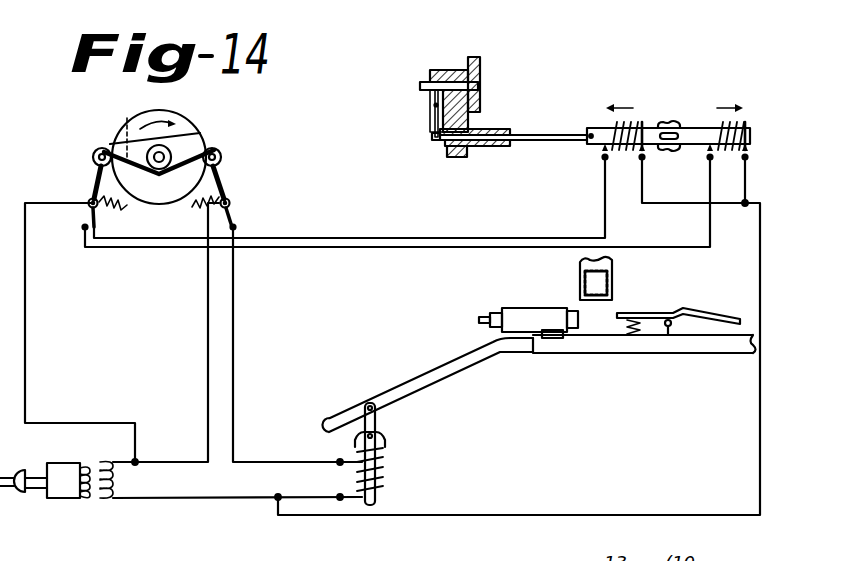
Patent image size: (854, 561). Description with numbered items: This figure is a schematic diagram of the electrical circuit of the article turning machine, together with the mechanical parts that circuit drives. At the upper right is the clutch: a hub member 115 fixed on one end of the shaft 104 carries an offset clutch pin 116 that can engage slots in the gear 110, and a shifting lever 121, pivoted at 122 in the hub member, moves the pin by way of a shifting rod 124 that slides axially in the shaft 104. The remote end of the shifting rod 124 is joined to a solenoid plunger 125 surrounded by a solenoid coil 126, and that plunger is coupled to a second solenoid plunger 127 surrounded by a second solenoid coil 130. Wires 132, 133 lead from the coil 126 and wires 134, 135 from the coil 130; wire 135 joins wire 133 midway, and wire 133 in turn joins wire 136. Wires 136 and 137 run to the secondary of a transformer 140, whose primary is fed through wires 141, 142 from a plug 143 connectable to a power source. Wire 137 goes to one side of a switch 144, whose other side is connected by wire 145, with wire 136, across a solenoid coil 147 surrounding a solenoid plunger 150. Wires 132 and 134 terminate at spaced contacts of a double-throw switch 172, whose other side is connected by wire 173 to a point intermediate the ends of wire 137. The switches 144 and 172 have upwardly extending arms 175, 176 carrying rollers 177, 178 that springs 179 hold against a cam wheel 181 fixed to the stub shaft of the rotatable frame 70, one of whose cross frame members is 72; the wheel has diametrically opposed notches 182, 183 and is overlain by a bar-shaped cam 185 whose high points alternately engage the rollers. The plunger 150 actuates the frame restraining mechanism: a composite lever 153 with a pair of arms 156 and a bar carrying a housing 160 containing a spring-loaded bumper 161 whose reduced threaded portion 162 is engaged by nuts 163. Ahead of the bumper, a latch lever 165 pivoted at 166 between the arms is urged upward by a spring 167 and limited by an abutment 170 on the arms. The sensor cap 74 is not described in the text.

The rectangular frame 70 is at (580, 274).
The cross frame member 72 is at (612, 285).
The sensor cap 74 is at (613, 261).
The shaft 104 is at (500, 128).
The gear 110 is at (472, 57).
The hub member 115 is at (450, 68).
The clutch pin 116 is at (421, 84).
The shifting lever 121 is at (436, 120).
The pivot 122 is at (430, 106).
The shifting rod 124 is at (553, 142).
The solenoid plunger 125 is at (600, 128).
The solenoid coil 126 is at (636, 126).
The second solenoid plunger 127 is at (688, 128).
The second solenoid coil 130 is at (745, 126).
The wire 132 is at (355, 238).
The wire 133 is at (645, 189).
The wire 134 is at (366, 250).
The wire 135 is at (748, 186).
The wire 136 is at (172, 500).
The wire 137 is at (160, 460).
The transformer 140 is at (96, 500).
The wire 141 is at (60, 500).
The wire 142 is at (55, 462).
The plug 143 is at (18, 494).
The switch 144 is at (232, 213).
The wire 145 is at (234, 343).
The solenoid coil 147 is at (386, 490).
The solenoid plunger 150 is at (376, 452).
The composite lever 153 is at (430, 372).
The arms 156 is at (697, 356).
The housing 160 is at (530, 309).
The bumper 161 is at (570, 345).
The reduced threaded portion 162 is at (478, 320).
The nuts 163 is at (496, 313).
The latch lever 165 is at (652, 313).
The pivot 166 is at (667, 337).
The spring 167 is at (632, 337).
The abutment 170 is at (740, 352).
The double-throw switch 172 is at (80, 222).
The wire 173 is at (26, 293).
The arm 175 is at (222, 178).
The arm 176 is at (94, 176).
The roller 177 is at (220, 150).
The roller 178 is at (95, 150).
The springs 179 is at (108, 212).
The cam wheel 181 is at (172, 108).
The notch 182 is at (200, 165).
The notch 183 is at (127, 118).
The cam 185 is at (196, 140).